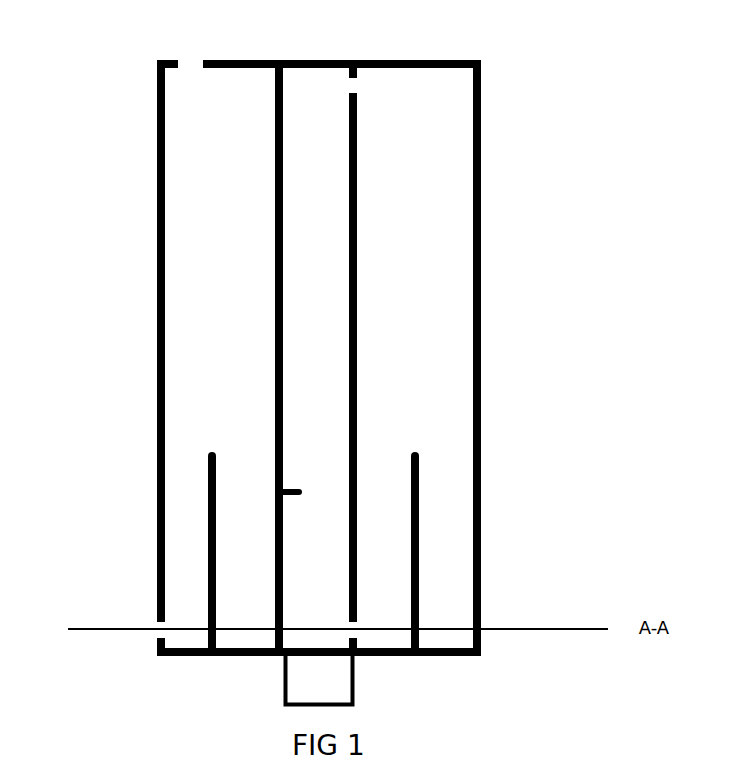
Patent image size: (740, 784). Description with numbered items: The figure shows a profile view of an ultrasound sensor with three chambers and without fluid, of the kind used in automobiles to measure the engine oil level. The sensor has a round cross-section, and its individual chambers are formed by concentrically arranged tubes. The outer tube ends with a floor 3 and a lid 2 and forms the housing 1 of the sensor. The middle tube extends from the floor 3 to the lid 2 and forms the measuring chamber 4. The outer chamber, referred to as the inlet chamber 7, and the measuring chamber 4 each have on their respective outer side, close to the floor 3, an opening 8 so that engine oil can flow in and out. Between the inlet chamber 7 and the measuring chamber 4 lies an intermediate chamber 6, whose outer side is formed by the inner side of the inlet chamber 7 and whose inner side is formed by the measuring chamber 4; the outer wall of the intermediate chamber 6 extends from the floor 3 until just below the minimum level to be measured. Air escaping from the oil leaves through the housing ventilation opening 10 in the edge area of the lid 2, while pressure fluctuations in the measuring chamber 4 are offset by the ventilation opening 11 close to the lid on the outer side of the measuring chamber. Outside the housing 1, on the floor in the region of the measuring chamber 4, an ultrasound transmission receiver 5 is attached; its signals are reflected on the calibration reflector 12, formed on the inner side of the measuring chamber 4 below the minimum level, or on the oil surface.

The housing 1 is at (480, 162).
The lid 2 is at (398, 60).
The floor 3 is at (253, 657).
The measuring chamber 4 is at (312, 248).
The ultrasound transmission receiver 5 is at (317, 679).
The intermediate chamber 6 is at (245, 482).
The inlet chamber 7 is at (182, 555).
The opening 8 is at (153, 628).
The housing ventilation opening 10 is at (190, 60).
The ventilation opening 11 is at (350, 87).
The calibration reflector 12 is at (297, 490).